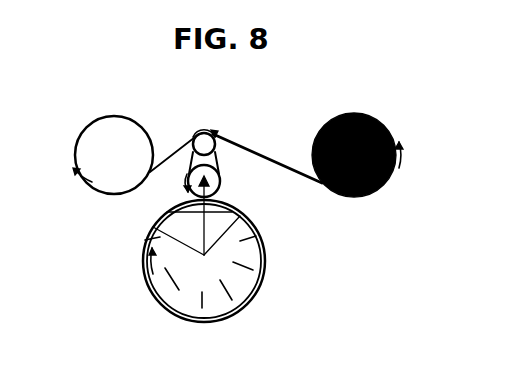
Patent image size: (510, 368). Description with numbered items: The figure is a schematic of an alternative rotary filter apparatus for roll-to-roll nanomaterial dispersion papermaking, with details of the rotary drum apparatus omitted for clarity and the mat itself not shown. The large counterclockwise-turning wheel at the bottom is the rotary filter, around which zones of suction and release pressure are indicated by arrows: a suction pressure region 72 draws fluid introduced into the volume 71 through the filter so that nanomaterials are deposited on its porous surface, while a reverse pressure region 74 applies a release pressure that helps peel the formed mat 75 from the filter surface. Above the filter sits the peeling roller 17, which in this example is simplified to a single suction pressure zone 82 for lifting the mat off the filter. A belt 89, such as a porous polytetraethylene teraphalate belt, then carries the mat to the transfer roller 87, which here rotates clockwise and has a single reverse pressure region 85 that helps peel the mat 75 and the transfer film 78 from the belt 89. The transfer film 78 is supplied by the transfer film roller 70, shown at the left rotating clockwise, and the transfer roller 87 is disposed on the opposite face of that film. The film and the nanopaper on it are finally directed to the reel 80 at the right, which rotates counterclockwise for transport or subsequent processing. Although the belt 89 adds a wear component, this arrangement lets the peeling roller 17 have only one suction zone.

The peeling roller 17 is at (175, 190).
The transfer film roller 70 is at (93, 162).
The volume 71 is at (161, 302).
The suction pressure region 72 is at (154, 292).
The reverse pressure region 74 is at (155, 233).
The mat 75 is at (260, 153).
The transfer film 78 is at (172, 157).
The reel 80 is at (390, 138).
The suction pressure zone 82 is at (219, 185).
The reverse pressure region 85 is at (194, 134).
The transfer roller 87 is at (206, 133).
The belt 89 is at (228, 142).